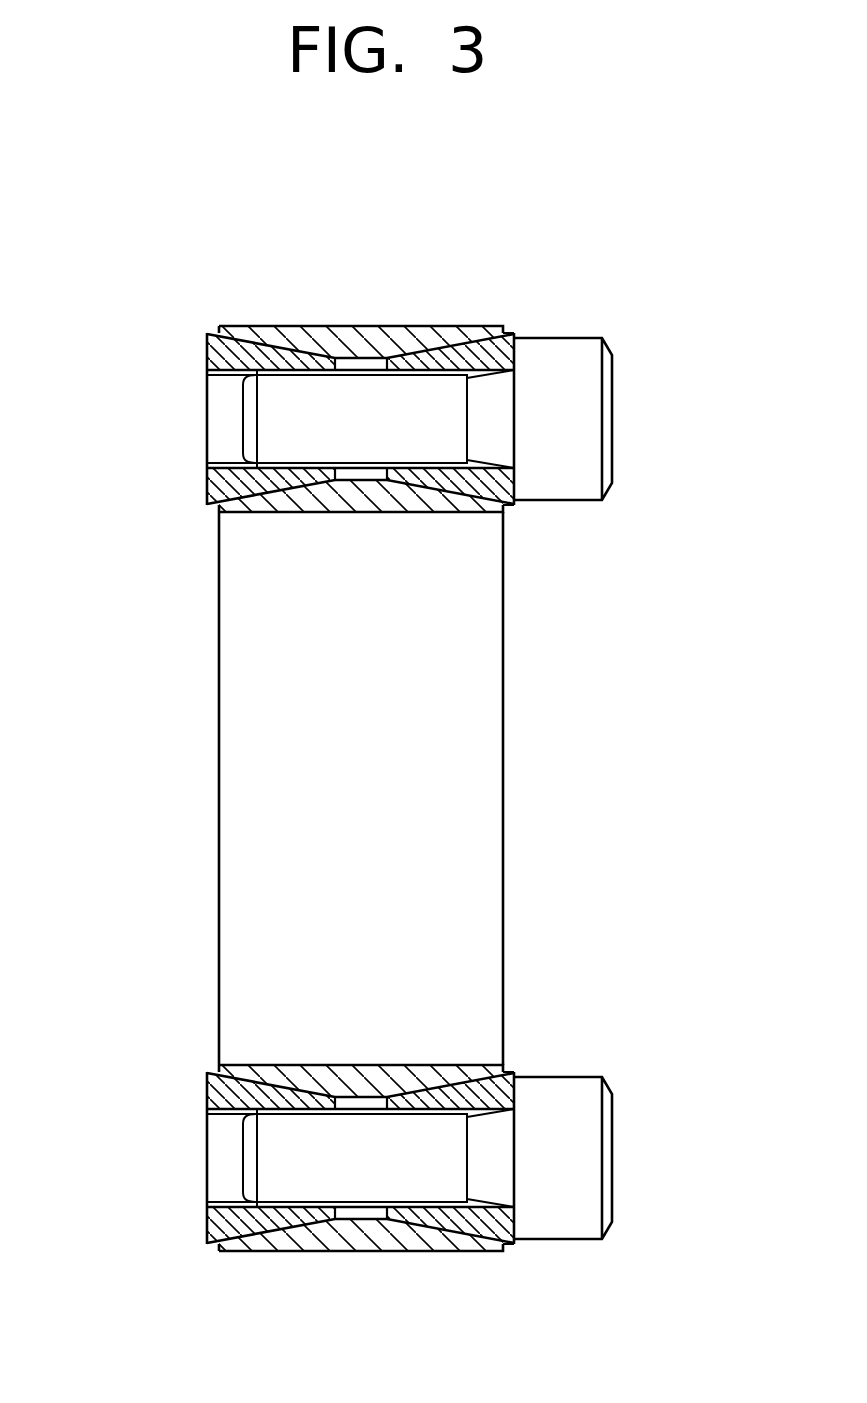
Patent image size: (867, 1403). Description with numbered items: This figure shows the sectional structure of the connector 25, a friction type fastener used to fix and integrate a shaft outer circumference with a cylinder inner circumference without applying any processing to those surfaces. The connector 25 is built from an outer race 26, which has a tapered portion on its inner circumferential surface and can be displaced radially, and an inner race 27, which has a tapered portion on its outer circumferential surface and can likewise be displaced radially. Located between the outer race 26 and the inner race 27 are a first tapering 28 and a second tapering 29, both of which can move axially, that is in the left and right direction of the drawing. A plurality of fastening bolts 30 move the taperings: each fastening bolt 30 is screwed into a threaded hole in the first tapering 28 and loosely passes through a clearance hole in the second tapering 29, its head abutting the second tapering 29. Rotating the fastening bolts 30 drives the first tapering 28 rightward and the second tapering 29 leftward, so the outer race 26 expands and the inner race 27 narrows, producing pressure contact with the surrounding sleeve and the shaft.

The connector 25 is at (370, 210).
The outer race 26 is at (358, 327).
The inner race 27 is at (337, 508).
The first tapering 28 is at (205, 357).
The second tapering 29 is at (510, 335).
The fastening bolt 30 is at (595, 420).